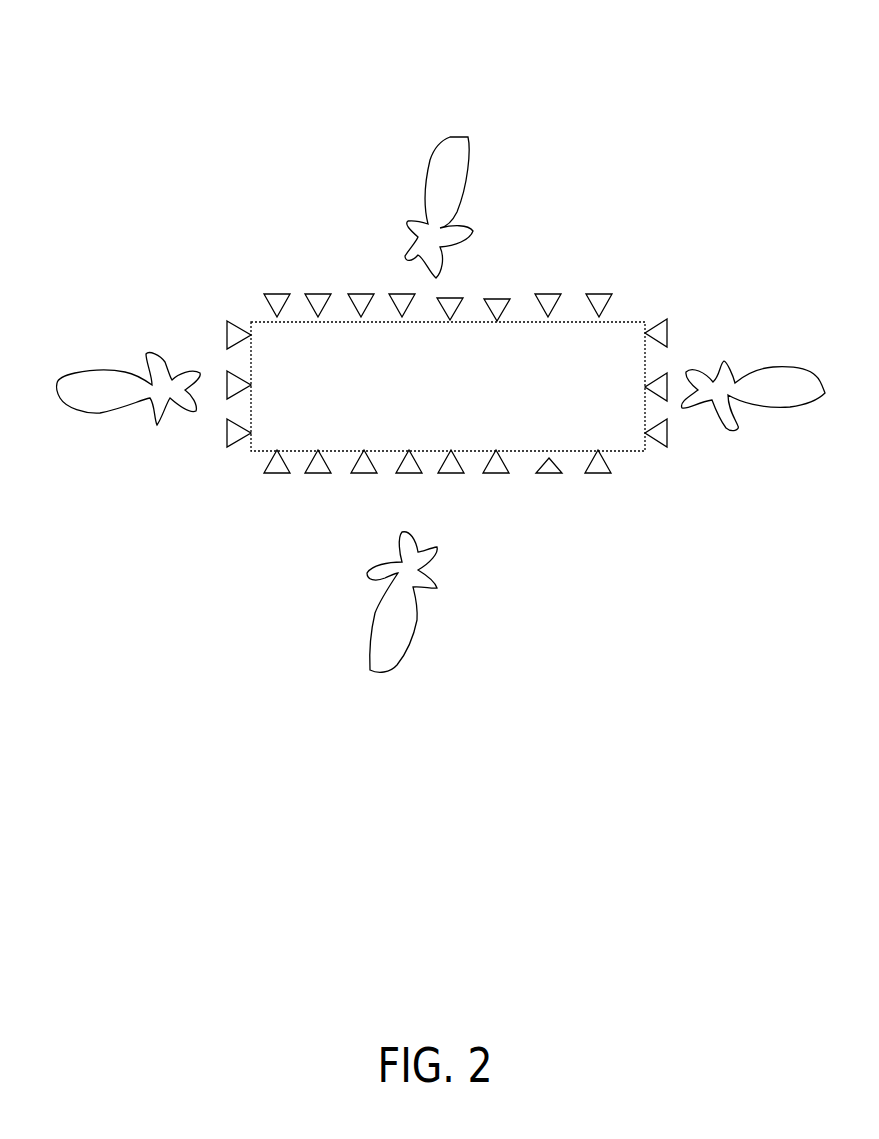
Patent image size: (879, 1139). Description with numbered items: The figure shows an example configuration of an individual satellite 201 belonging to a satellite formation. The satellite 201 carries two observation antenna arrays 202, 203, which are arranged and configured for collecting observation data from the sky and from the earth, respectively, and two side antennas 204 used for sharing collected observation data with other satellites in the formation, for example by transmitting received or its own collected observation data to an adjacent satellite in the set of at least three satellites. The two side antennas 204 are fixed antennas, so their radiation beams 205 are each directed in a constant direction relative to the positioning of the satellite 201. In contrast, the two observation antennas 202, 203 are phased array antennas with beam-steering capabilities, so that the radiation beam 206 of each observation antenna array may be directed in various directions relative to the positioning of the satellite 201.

The satellite 201 is at (270, 187).
The observation antenna array 202 is at (548, 290).
The observation antenna array 203 is at (488, 472).
The side antenna 204 is at (230, 442).
The radiation beam 205 is at (92, 415).
The radiation beam 206 is at (458, 133).